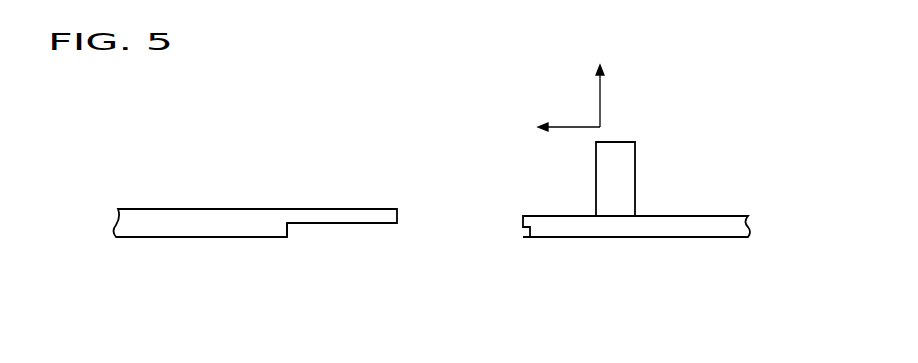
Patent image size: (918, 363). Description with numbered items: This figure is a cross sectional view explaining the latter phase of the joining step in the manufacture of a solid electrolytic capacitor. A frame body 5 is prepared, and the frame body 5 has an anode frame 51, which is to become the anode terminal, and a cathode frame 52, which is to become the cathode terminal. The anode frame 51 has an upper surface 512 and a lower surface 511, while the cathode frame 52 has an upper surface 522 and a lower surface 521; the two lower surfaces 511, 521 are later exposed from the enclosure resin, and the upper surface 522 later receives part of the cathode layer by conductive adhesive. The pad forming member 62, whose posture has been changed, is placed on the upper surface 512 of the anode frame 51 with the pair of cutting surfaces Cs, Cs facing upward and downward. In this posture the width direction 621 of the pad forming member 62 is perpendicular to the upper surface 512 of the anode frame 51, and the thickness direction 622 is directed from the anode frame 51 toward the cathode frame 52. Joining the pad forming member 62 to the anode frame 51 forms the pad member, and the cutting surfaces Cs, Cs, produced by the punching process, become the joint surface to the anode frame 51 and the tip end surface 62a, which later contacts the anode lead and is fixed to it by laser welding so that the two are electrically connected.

The frame body 5 is at (713, 240).
The anode frame 51 is at (647, 225).
The lower surface of the anode frame 511 is at (547, 237).
The upper surface of the anode frame 512 is at (573, 215).
The cathode frame 52 is at (150, 223).
The lower surface of the cathode frame 521 is at (222, 237).
The upper surface of the cathode frame 522 is at (257, 210).
The pad forming member 62 is at (617, 173).
The tip end surface of the pad forming member 62a is at (618, 138).
The width direction 621 is at (600, 93).
The thickness direction 622 is at (568, 125).
The cutting surface Cs is at (613, 140).